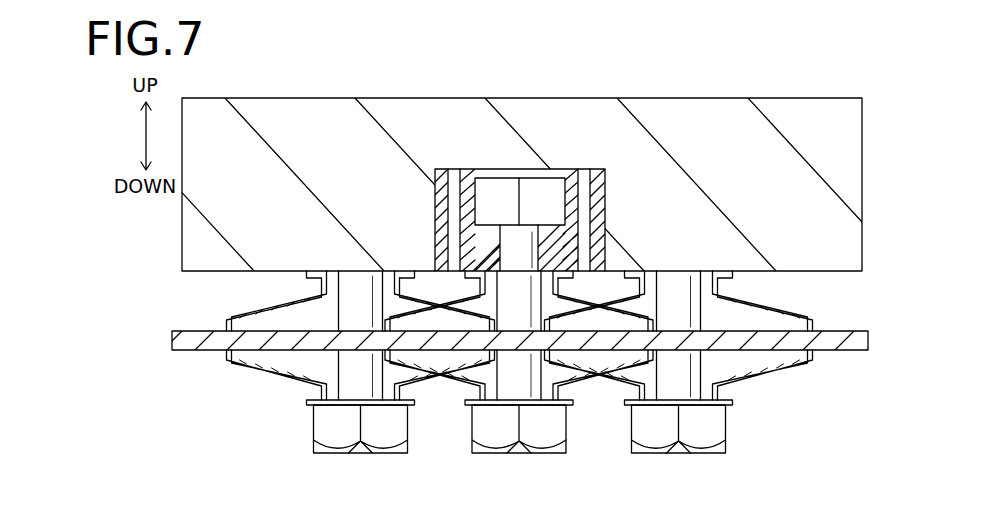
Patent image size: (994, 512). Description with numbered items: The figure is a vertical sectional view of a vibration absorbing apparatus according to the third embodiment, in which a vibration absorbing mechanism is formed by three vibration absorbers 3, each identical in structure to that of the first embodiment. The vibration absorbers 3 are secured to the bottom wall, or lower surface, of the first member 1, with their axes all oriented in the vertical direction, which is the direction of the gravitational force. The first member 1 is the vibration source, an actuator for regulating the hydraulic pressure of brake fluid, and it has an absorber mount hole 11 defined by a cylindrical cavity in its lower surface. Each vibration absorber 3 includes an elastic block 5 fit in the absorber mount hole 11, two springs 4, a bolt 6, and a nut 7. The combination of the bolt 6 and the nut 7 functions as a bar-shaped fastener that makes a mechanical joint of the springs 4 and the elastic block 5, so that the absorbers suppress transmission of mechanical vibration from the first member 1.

The first member 1 is at (836, 113).
The vibration absorber 3 is at (427, 395).
The springs 4 is at (610, 272).
The elastic block 5 is at (468, 177).
The bolt 6 is at (385, 428).
The nut 7 is at (495, 193).
The absorber mount hole 11 is at (437, 237).